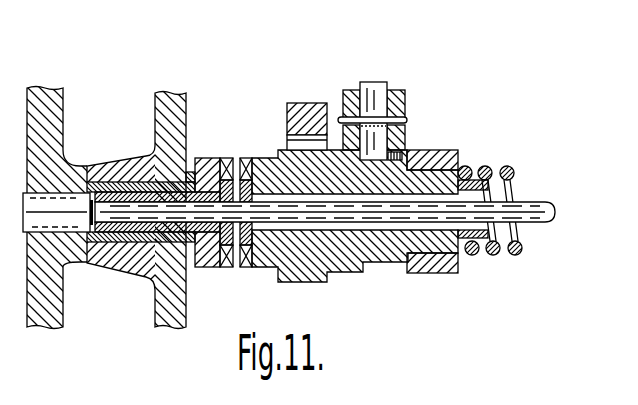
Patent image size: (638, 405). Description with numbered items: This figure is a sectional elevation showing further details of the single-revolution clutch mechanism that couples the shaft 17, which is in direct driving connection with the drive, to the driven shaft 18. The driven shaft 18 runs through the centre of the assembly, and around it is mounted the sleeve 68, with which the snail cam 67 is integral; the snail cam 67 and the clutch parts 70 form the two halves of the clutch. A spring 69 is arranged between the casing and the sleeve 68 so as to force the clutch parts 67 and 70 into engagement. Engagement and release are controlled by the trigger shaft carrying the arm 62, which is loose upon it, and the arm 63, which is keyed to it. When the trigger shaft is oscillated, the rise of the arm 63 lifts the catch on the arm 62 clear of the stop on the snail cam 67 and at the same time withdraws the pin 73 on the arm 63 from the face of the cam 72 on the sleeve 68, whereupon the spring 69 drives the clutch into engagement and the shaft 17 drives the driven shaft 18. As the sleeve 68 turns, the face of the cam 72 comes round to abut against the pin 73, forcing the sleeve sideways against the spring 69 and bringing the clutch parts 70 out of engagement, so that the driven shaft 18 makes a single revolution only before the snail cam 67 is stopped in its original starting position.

The shaft 17 is at (102, 162).
The driven shaft 18 is at (527, 205).
The arm 62 is at (308, 103).
The arm 63 is at (395, 92).
The snail cam 67 is at (278, 151).
The sleeve 68 is at (432, 151).
The spring 69 is at (486, 170).
The clutch parts 70 is at (247, 266).
The cam 72 is at (408, 122).
The pin 73 is at (380, 147).